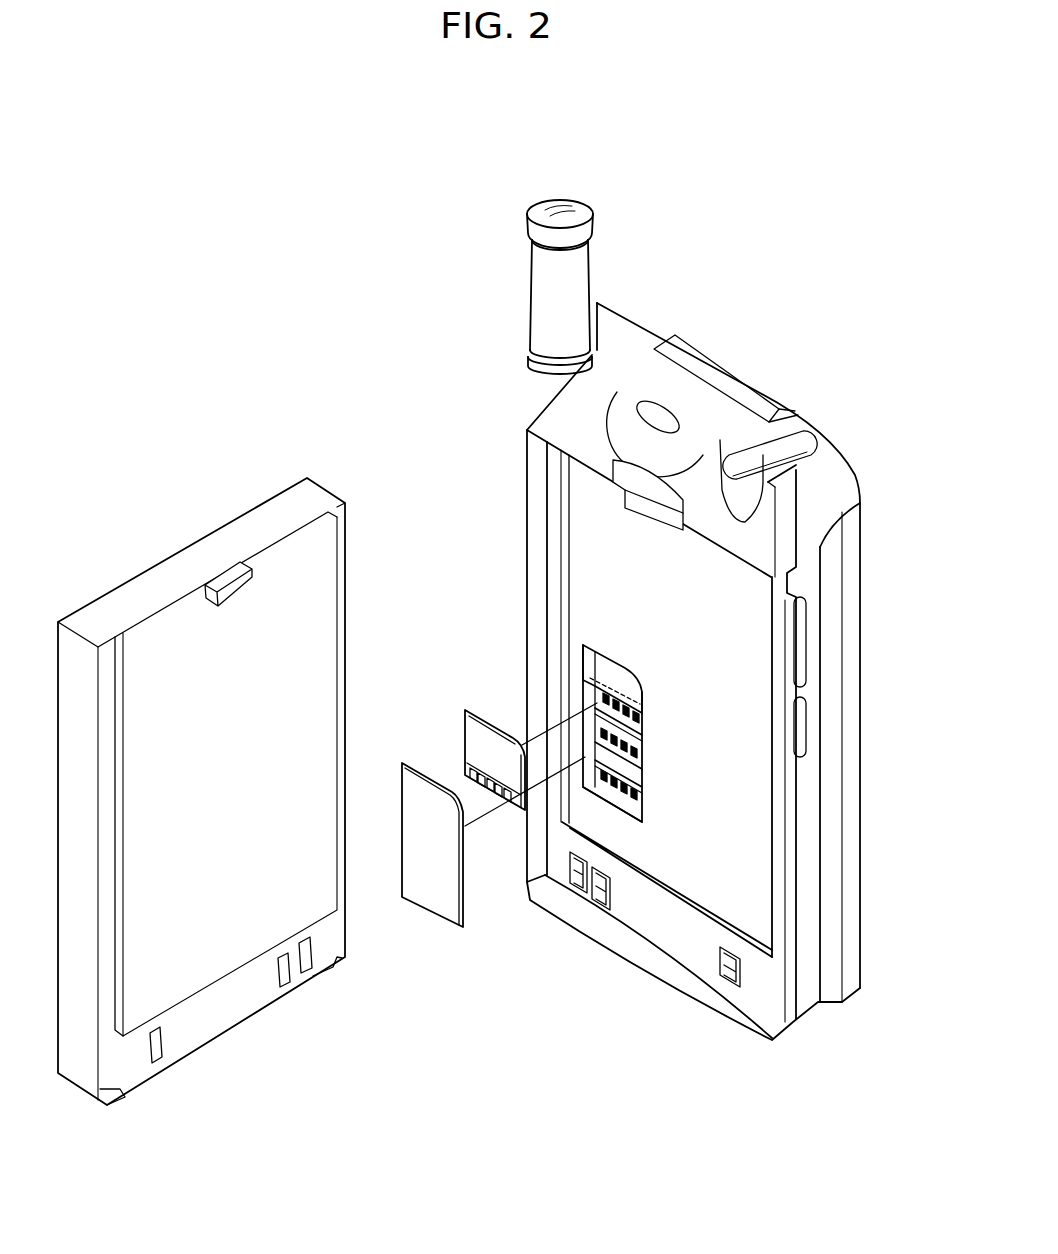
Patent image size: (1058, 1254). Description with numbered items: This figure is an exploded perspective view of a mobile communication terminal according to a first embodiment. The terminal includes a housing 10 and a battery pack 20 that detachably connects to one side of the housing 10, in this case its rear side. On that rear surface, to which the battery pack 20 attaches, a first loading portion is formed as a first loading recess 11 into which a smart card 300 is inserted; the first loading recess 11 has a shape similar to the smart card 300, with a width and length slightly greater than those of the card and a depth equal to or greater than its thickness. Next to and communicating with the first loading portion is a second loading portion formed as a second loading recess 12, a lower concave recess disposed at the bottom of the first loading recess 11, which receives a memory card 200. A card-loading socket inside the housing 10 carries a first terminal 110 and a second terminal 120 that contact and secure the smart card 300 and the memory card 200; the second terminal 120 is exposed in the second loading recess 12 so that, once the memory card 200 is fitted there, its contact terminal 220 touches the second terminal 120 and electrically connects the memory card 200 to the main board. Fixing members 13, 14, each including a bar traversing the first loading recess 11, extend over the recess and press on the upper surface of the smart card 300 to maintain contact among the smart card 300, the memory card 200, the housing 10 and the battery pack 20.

The housing 10 is at (860, 662).
The first loading recess 11 is at (600, 797).
The second loading recess 12 is at (616, 673).
The fixing member 13 is at (642, 777).
The fixing member 14 is at (588, 683).
The battery pack 20 is at (170, 560).
The first terminal 110 is at (590, 776).
The second terminal 120 is at (643, 707).
The memory card 200 is at (472, 737).
The contact terminal 220 is at (474, 774).
The smart card 300 is at (437, 903).